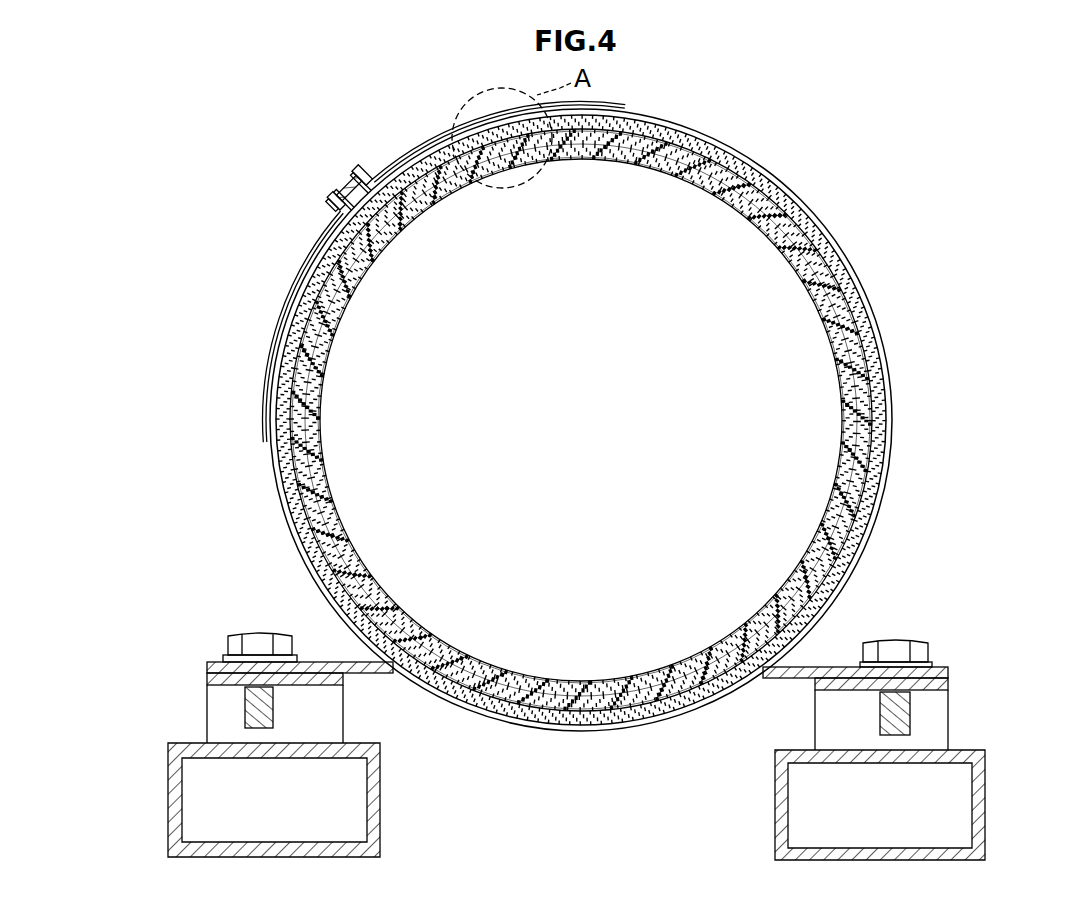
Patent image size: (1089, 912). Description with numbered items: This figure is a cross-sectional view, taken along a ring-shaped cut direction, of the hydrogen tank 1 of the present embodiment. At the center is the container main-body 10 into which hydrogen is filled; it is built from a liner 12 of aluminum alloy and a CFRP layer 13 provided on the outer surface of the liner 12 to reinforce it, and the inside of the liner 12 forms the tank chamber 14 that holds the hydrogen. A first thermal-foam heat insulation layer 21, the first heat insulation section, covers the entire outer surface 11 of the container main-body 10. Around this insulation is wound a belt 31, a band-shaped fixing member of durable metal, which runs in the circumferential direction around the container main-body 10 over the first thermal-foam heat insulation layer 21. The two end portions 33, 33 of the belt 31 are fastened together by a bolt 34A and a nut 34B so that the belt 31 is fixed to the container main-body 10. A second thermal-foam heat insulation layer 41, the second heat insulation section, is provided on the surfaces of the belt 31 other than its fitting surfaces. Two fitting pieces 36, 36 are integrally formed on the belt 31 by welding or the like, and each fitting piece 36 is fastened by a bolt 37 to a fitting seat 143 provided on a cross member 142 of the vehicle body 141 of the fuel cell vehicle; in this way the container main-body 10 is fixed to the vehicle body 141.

The hydrogen tank 1 is at (978, 158).
The container main-body 10 is at (763, 167).
The outer surface 11 is at (800, 198).
The liner 12 is at (815, 233).
The CFRP layer 13 is at (818, 257).
The tank chamber 14 is at (595, 422).
The first thermal-foam heat insulation layer 21 is at (867, 293).
The belt 31 is at (670, 128).
The end portion 33 is at (415, 165).
The bolt 34A is at (367, 165).
The nut 34B is at (326, 203).
The fitting piece 36 is at (305, 660).
The bolt 37 is at (241, 633).
The second thermal-foam heat insulation layer 41 is at (882, 330).
The vehicle body 141 is at (1002, 668).
The cross member 142 is at (172, 778).
The fitting seat 143 is at (215, 717).